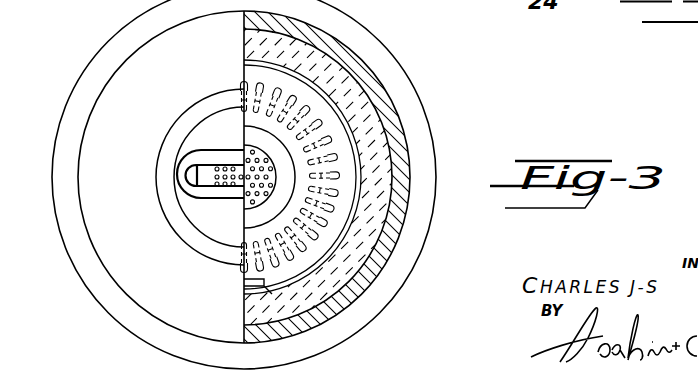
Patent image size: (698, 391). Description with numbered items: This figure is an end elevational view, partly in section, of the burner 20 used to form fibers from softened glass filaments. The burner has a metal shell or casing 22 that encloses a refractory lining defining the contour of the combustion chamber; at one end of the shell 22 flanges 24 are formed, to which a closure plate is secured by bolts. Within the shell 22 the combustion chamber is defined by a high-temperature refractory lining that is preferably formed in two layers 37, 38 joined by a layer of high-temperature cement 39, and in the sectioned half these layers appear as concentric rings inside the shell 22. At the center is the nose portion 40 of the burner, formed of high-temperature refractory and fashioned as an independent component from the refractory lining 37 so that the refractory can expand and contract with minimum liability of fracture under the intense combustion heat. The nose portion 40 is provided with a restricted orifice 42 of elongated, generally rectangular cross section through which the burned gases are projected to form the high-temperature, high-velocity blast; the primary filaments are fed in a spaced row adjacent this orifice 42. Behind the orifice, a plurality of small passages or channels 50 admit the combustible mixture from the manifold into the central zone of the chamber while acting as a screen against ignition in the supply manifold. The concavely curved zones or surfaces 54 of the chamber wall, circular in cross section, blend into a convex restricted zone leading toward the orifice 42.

The lock cylinder assembly 20 is at (424, 51).
The shell or casing 22 is at (407, 195).
The flanges 24 is at (377, 303).
The refractory lining layer 37 is at (387, 145).
The refractory lining layer 38 is at (380, 117).
The layer of high-temperature cement 39 is at (310, 72).
The nose portion 40 is at (220, 117).
The restricted orifice 42 is at (202, 180).
The passages or channels 50 is at (250, 210).
The concave zones or surfaces of the chamber wall 54 is at (244, 282).